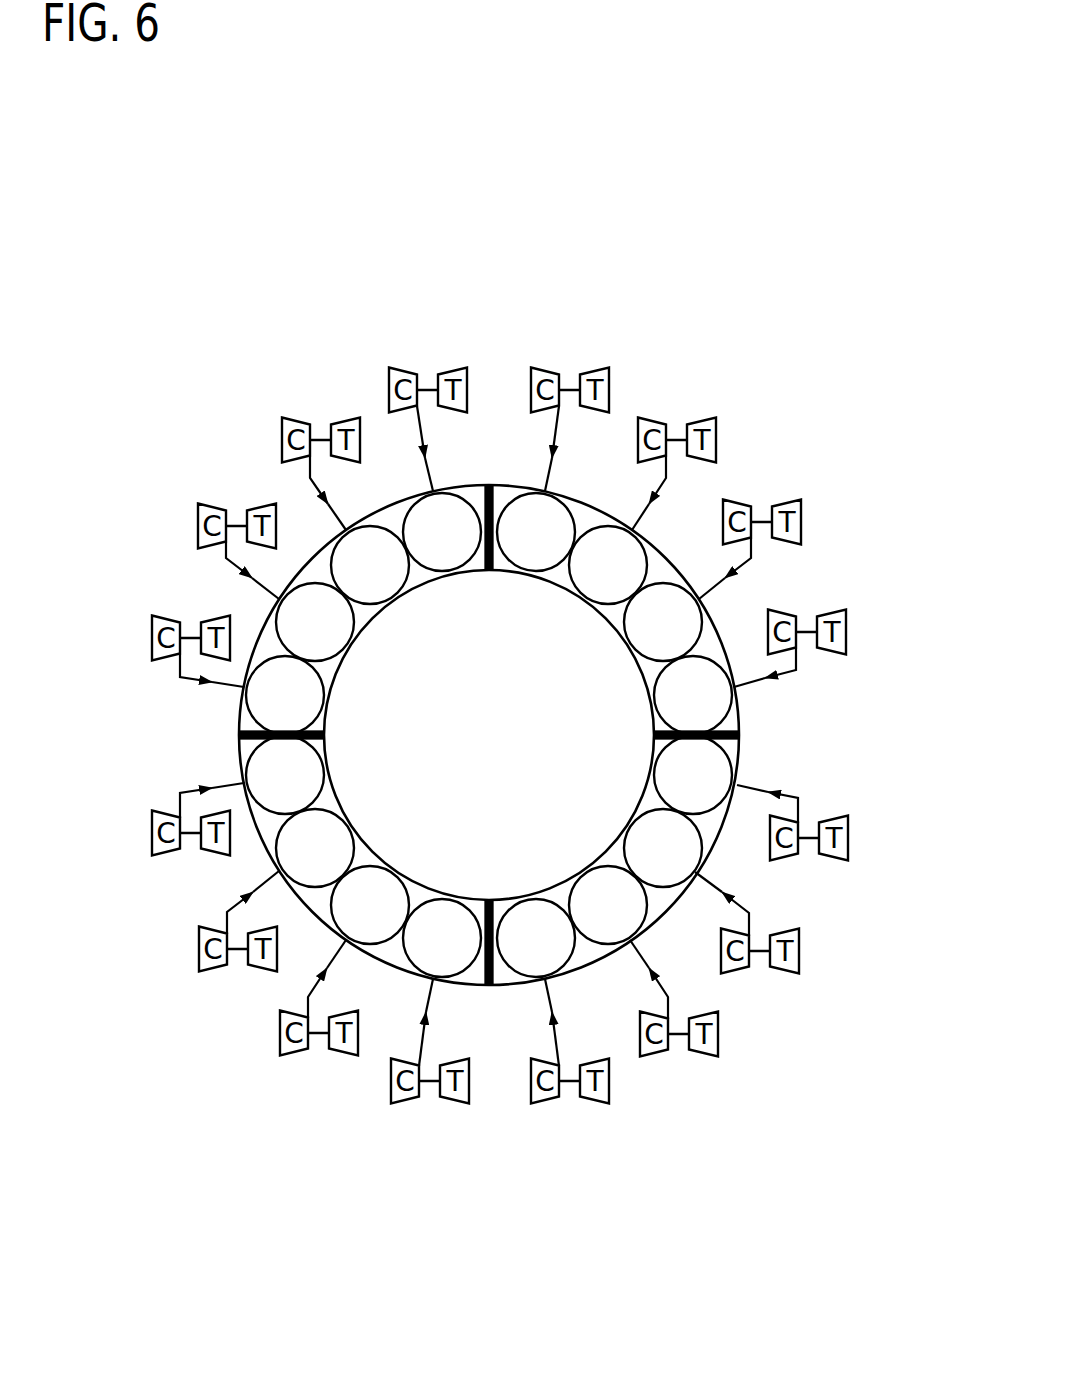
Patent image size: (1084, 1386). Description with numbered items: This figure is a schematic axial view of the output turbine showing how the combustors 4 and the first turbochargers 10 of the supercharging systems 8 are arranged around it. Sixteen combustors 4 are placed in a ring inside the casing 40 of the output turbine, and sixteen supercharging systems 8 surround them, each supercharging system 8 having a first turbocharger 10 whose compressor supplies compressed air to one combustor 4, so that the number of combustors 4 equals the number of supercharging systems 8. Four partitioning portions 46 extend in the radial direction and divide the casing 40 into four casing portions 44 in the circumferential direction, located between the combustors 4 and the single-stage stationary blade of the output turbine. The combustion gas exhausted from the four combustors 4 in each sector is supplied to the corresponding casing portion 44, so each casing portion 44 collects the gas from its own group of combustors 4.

The combustor 4 is at (451, 570).
The supercharging system 8 is at (503, 726).
The first turbocharger 10 is at (420, 364).
The casing 40 is at (491, 738).
The casing portion 44 is at (395, 522).
The partitioning portion 46 is at (489, 485).